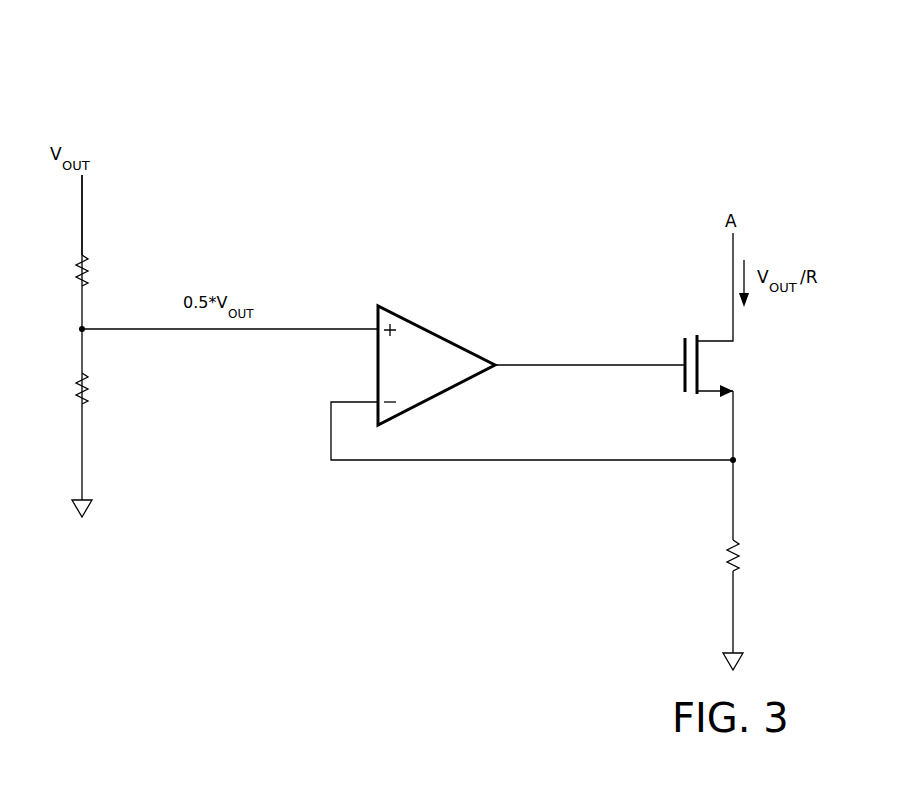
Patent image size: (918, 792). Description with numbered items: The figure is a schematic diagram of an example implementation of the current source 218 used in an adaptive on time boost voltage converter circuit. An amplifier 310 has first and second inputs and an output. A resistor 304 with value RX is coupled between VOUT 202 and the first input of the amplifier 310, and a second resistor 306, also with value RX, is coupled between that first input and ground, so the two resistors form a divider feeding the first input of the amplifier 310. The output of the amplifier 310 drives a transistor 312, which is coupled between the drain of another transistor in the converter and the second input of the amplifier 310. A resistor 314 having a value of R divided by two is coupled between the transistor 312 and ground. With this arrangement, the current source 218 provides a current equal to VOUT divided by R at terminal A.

The current source 218 is at (164, 70).
The VOUT 202 is at (84, 210).
The resistor 304 is at (88, 270).
The resistor 306 is at (89, 392).
The amplifier 310 is at (437, 334).
The transistor 312 is at (683, 355).
The resistor 314 is at (738, 556).